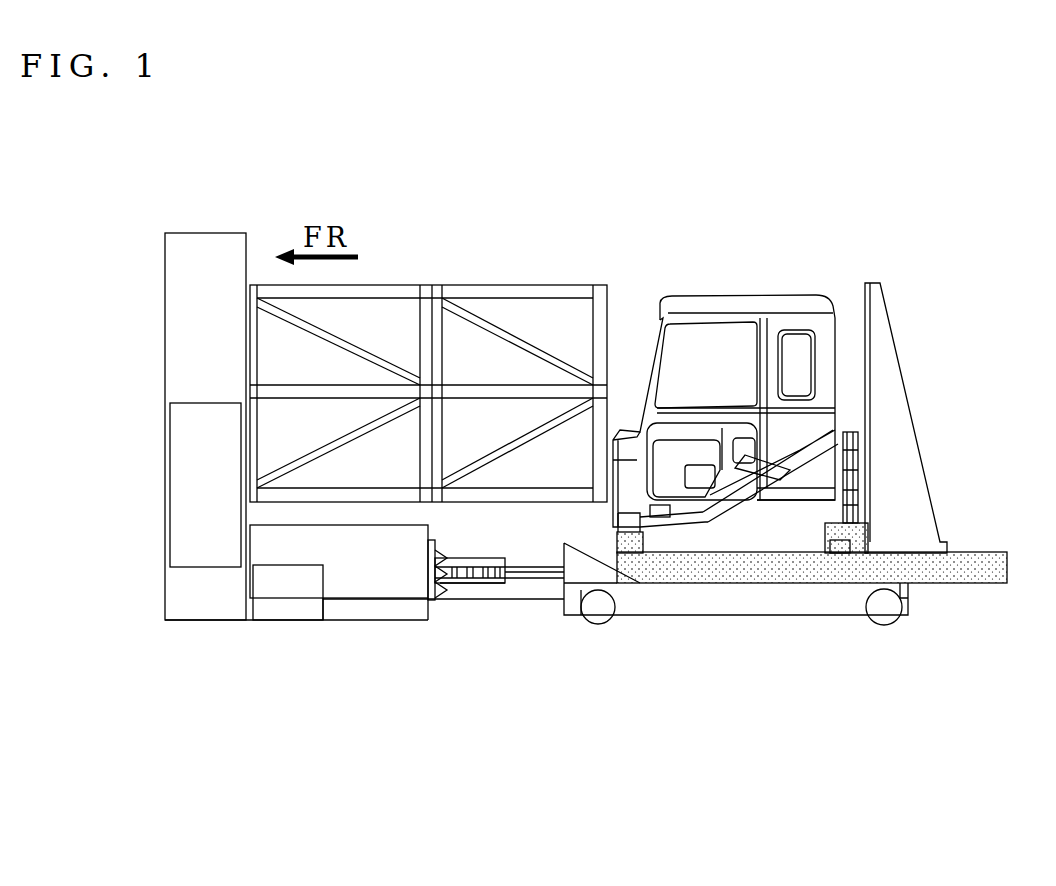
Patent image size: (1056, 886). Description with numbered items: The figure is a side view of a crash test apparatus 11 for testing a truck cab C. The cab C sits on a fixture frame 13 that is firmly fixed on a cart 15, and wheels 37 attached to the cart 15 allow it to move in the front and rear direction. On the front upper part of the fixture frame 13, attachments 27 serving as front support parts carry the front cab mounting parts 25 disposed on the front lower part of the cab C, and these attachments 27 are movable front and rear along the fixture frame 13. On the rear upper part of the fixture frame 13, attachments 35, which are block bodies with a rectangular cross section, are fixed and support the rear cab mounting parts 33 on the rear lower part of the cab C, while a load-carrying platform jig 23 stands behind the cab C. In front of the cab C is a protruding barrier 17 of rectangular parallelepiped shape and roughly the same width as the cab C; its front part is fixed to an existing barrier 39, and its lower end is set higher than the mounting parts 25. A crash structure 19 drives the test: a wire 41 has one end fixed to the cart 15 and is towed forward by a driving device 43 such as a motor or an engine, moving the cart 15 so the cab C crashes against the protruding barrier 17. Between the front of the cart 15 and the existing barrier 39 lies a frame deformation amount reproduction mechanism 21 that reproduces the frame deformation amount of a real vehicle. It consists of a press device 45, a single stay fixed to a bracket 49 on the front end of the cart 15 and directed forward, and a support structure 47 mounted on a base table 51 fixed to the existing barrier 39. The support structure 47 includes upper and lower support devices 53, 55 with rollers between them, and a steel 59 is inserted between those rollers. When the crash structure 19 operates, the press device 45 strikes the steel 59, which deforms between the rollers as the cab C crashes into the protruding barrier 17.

The crash test apparatus 11 is at (566, 235).
The fixture frame 13 is at (803, 570).
The cart 15 is at (744, 607).
The protruding barrier 17 is at (455, 287).
The crash structure 19 is at (350, 614).
The frame deformation amount reproduction mechanism 21 is at (493, 594).
The load-carrying platform jig 23 is at (885, 363).
The front cab mounting part 25 is at (643, 535).
The attachment (front support part) 27 is at (622, 560).
The rear cab mounting part 33 is at (858, 517).
The attachment (rear support part) 35 is at (832, 548).
The wheels 37 is at (598, 607).
The existing barrier 39 is at (183, 472).
The wire 41 is at (388, 600).
The driving device 43 is at (268, 610).
The press device 45 is at (538, 572).
The support structure 47 is at (460, 586).
The bracket 49 is at (588, 621).
The base table 51 is at (315, 550).
The support device 53 is at (465, 558).
The support device 55 is at (482, 583).
The steel 59 is at (490, 558).
The cab C is at (753, 292).